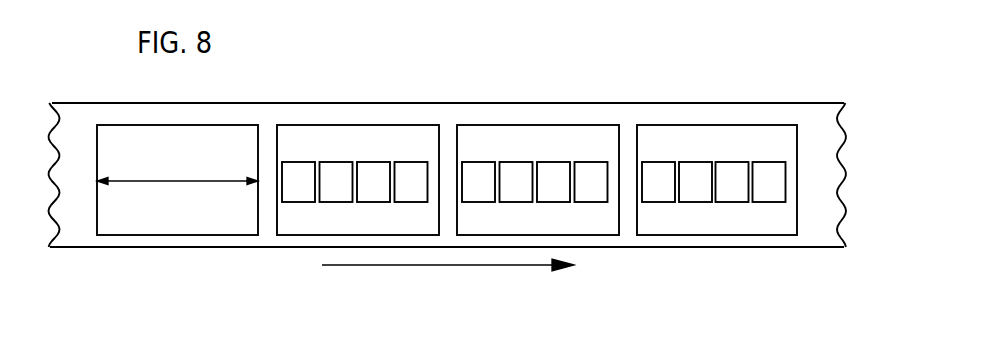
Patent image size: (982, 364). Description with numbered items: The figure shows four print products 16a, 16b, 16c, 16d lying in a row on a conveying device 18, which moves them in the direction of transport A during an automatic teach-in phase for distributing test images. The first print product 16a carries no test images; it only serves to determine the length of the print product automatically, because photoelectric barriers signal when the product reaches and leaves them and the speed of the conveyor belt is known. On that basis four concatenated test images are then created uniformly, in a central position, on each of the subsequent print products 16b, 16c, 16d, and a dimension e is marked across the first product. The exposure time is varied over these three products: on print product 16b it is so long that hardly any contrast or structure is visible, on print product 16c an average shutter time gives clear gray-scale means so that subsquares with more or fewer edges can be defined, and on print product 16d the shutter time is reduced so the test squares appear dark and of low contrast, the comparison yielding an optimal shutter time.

The conveying device 18 is at (598, 102).
The print product 16a is at (165, 223).
The print product 16b is at (358, 212).
The print product 16c is at (538, 212).
The print product 16d is at (717, 212).
The field width dimension e is at (177, 171).
The direction of transport A is at (452, 267).